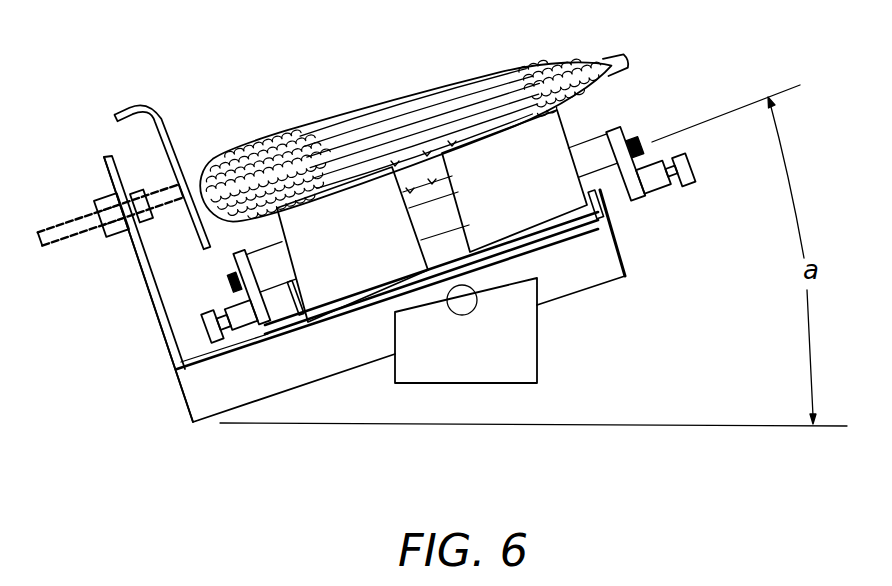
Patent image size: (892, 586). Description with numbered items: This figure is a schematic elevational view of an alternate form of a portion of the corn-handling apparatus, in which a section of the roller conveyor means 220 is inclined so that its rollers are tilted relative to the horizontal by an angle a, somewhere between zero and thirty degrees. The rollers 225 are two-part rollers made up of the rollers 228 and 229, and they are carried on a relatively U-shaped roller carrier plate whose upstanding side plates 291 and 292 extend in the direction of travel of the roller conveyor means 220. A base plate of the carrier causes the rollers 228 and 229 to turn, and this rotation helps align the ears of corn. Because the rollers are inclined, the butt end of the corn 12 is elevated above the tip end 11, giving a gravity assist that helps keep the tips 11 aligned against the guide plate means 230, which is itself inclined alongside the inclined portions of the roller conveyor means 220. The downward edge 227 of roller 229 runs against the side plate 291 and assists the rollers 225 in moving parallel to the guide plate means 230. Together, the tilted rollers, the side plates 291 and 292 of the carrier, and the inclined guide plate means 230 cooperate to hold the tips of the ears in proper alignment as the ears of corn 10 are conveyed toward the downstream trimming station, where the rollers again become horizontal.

The ear of corn 10 is at (348, 108).
The tip end 11 is at (213, 185).
The butt end of the corn 12 is at (619, 57).
The roller conveyor means 220 is at (156, 380).
The rollers 225 is at (486, 140).
The downward edge 227 is at (284, 232).
The roller 228 is at (534, 195).
The roller 229 is at (367, 247).
The guide plate means 230 is at (160, 100).
The side plate 291 is at (292, 300).
The side plate 292 is at (605, 200).